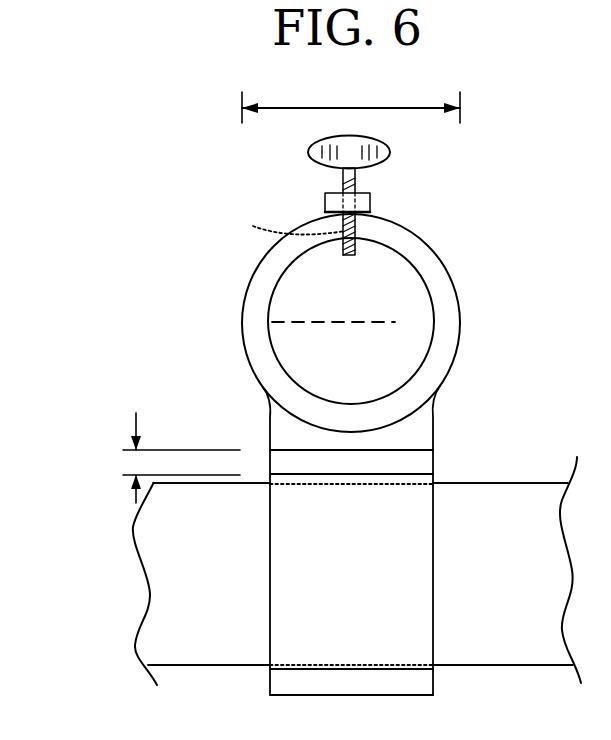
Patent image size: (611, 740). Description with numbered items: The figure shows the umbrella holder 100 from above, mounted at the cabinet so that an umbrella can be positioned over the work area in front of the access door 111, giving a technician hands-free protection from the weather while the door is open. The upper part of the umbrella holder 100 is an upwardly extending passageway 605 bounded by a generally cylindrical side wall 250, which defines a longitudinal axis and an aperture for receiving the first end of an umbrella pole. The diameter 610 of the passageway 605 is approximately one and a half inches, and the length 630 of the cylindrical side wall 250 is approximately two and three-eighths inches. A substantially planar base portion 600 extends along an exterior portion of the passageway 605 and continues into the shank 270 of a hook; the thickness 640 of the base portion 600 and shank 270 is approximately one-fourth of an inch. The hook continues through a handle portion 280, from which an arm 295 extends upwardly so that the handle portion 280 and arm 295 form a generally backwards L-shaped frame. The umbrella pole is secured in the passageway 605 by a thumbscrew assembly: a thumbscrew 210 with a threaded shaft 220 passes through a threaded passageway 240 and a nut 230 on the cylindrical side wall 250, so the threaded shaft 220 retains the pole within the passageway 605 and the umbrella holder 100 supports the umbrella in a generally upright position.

The umbrella holder 100 is at (150, 151).
The access door 111 is at (178, 537).
The thumbscrew 210 is at (390, 152).
The threaded shaft 220 is at (356, 178).
The nut 230 is at (371, 206).
The threaded passageway 240 is at (284, 218).
The cylindrical side wall 250 is at (460, 303).
The shank 270 is at (434, 463).
The handle portion 280 is at (420, 582).
The arm 295 is at (434, 678).
The base portion 600 is at (431, 426).
The passageway 605 is at (388, 358).
The diameter 610 is at (395, 322).
The length 630 is at (328, 108).
The thickness 640 is at (132, 463).